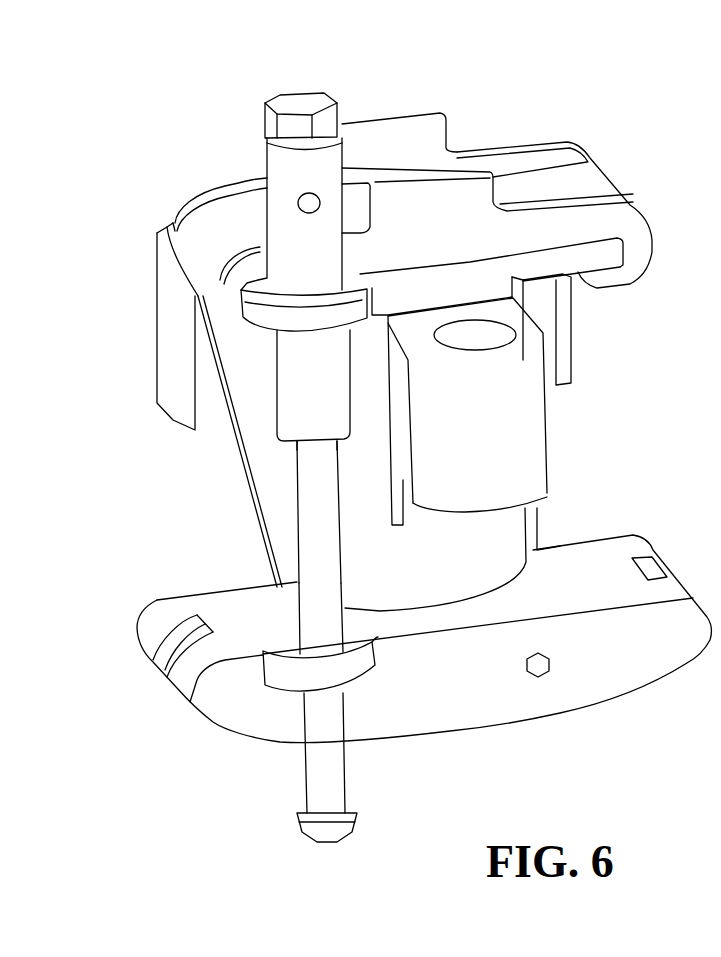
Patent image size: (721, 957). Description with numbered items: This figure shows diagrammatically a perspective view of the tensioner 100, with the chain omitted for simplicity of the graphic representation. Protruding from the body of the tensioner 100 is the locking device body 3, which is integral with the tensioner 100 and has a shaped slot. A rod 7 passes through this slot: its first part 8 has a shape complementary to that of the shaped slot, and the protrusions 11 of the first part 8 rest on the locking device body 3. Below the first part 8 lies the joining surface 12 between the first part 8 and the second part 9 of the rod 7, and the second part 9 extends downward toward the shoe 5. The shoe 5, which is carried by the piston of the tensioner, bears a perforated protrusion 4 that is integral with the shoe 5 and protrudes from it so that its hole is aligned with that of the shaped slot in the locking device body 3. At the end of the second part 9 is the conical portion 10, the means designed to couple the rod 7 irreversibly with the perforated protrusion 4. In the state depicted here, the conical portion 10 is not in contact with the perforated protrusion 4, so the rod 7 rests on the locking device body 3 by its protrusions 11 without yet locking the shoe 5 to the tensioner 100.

The tensioner 100 is at (404, 362).
The protrusions 11 is at (258, 276).
The locking device body 3 is at (280, 331).
The first part 8 is at (303, 393).
The joining surface 12 is at (312, 446).
The rod 7 is at (297, 538).
The second part 9 is at (320, 613).
The perforated protrusion 4 is at (357, 669).
The shoe 5 is at (605, 675).
The conical portion 10 is at (327, 838).